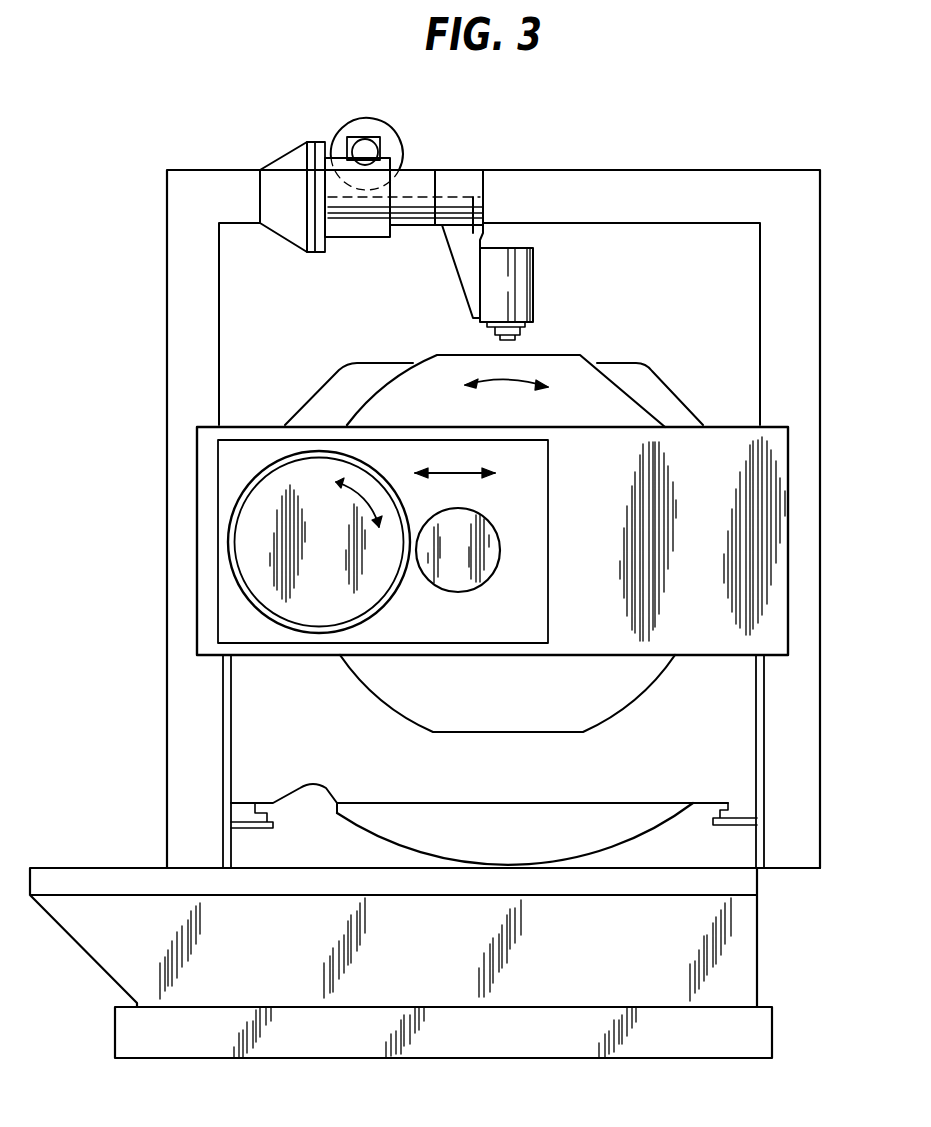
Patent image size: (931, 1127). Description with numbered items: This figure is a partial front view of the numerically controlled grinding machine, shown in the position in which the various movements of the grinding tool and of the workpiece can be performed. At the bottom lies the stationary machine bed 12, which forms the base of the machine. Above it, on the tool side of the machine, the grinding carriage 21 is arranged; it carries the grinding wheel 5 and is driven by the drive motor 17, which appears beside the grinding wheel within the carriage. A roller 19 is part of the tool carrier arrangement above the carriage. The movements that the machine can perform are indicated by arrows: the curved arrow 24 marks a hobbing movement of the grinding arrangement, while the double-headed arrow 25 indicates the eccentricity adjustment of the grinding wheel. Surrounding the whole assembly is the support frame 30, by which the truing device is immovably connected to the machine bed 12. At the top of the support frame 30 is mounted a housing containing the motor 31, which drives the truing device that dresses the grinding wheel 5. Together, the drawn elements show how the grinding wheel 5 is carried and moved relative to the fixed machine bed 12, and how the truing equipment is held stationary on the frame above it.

The grinding wheel 5 is at (255, 568).
The machine bed 12 is at (602, 949).
The drive motor 17 is at (487, 543).
The roller 19 is at (615, 390).
The grinding carriage 21 is at (233, 462).
The arrow indicating hobbing movement 24 is at (493, 382).
The double-headed arrow indicating eccentricity adjustment 25 is at (445, 472).
The support frame 30 is at (805, 352).
The motor 31 is at (517, 275).